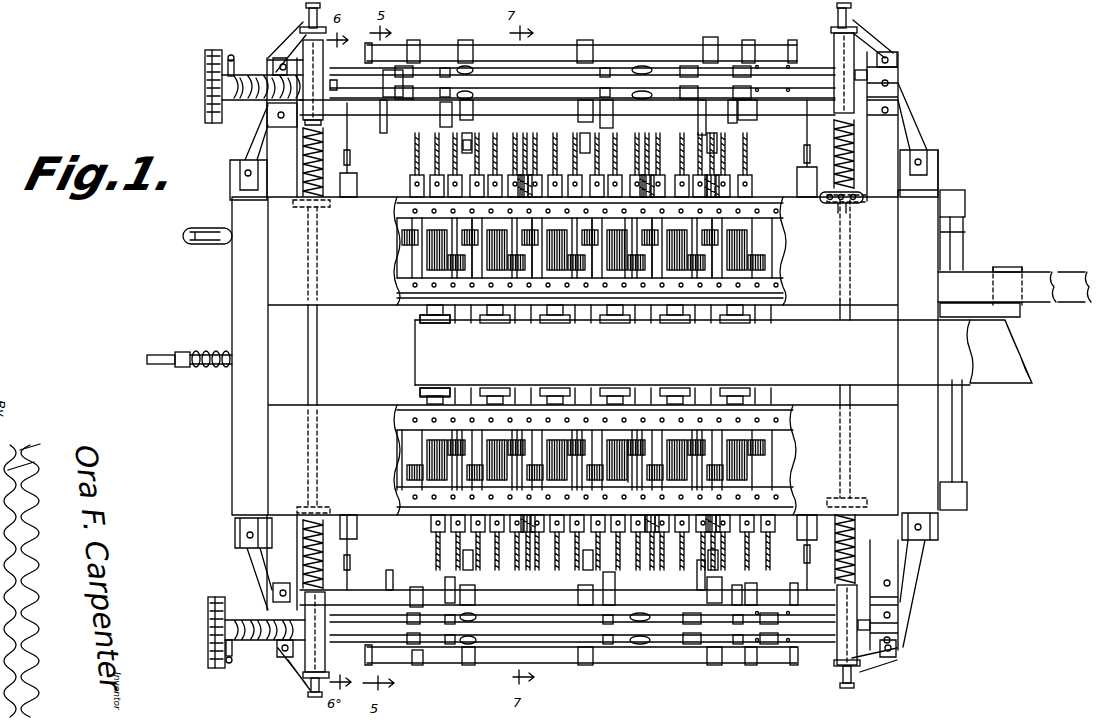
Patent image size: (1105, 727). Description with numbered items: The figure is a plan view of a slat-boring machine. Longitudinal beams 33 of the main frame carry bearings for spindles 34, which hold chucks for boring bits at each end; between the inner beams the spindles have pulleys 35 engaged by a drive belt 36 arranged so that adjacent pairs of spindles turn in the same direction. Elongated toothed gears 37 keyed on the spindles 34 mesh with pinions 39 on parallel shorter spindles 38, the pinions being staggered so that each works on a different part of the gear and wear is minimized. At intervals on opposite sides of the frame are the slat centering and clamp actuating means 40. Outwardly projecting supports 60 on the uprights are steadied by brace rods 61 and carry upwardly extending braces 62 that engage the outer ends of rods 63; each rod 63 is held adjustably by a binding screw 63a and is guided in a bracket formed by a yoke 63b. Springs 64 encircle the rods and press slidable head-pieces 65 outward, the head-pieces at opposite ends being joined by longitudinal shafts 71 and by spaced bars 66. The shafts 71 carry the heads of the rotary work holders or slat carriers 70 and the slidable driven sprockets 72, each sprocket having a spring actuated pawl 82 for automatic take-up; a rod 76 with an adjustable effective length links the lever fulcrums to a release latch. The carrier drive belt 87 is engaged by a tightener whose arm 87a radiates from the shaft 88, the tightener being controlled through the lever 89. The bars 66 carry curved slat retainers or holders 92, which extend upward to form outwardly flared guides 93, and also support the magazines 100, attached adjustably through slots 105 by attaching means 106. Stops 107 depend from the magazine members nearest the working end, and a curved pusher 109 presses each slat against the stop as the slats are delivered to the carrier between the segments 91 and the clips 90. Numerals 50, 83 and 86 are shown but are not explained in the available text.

The longitudinal beams 33 is at (627, 363).
The spindles 34 is at (755, 312).
The pulleys 35 is at (417, 323).
The drive belt 36 is at (723, 352).
The elongated toothed gears 37 is at (433, 270).
The shorter spindles 38 is at (403, 268).
The pinions 39 is at (407, 238).
The slat centering and clamp actuating means 40 is at (469, 138).
The needle 50 is at (526, 140).
The outwardly projecting supports 60 is at (919, 579).
The brace rods 61 is at (263, 133).
The upwardly extending braces 62 is at (302, 26).
The rods 63 is at (317, 375).
The binding screw 63a is at (591, 362).
The yoke 63b is at (848, 205).
The springs 64 is at (855, 185).
The slidable head-pieces 65 is at (300, 50).
The spaced bars 66 is at (543, 65).
The rotary work holders or slat carriers 70 is at (660, 50).
The longitudinal shafts 71 is at (863, 75).
The driven sprockets 72 is at (205, 62).
The rod 76 is at (350, 150).
The spring actuated pawl 82 is at (232, 72).
The bearing block 83 is at (283, 118).
The crank shaft 86 is at (209, 353).
The belt 87 is at (990, 312).
The arm 87a is at (1010, 308).
The shaft 88 is at (958, 445).
The lever 89 is at (215, 245).
The clips 90 is at (466, 40).
The segments 91 is at (413, 42).
The slat retainers or holders 92 is at (445, 120).
The outwardly flared guides 93 is at (445, 68).
The magazines 100 is at (683, 628).
The slots 105 is at (500, 95).
The attaching means 106 is at (470, 90).
The stops 107 is at (370, 130).
The pusher 109 is at (700, 128).